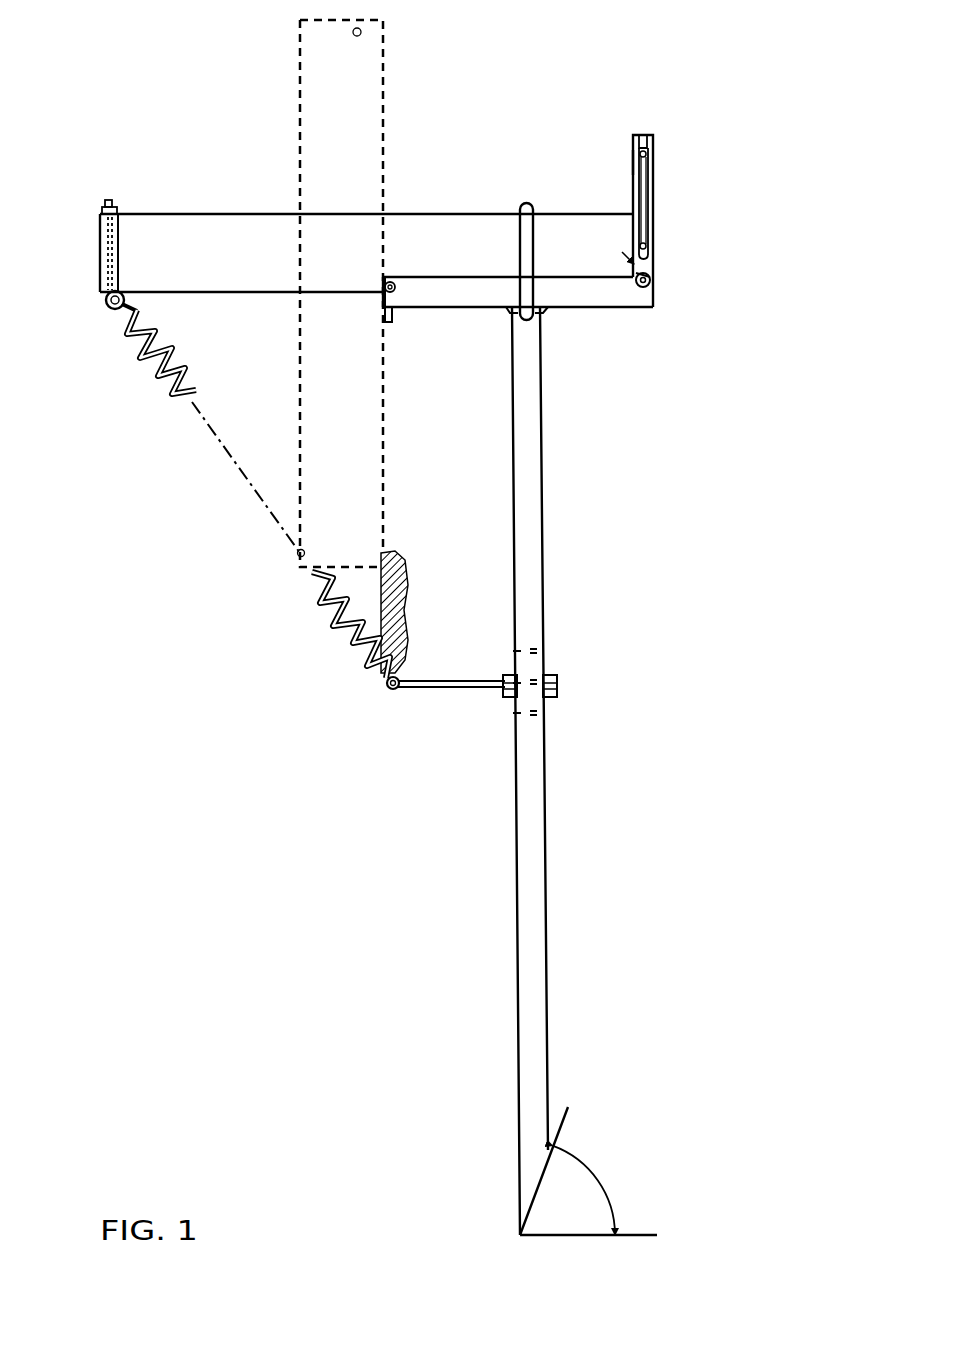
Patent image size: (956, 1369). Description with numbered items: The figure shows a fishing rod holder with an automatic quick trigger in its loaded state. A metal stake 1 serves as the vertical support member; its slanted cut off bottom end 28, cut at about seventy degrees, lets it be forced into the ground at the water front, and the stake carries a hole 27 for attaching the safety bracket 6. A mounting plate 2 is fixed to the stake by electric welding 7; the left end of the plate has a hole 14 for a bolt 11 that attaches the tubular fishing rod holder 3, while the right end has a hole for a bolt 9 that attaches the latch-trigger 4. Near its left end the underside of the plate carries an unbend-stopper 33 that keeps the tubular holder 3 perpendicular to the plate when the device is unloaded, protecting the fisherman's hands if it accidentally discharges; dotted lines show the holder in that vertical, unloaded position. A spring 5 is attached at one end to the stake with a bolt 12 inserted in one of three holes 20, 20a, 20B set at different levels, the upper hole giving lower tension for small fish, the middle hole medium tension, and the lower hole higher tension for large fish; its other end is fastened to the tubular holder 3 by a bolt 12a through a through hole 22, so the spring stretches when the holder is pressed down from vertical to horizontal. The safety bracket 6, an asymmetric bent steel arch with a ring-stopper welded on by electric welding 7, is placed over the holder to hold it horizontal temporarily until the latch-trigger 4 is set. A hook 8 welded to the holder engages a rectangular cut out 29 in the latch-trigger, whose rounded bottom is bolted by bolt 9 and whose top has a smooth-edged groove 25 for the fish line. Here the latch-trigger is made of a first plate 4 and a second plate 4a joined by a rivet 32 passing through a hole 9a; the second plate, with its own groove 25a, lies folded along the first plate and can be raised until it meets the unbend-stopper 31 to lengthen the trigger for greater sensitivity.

The metal stake 1 is at (530, 422).
The mounting plate 2 is at (648, 298).
The tubular fishing rod holder 3 is at (412, 230).
The latch-trigger 4 is at (635, 143).
The second plate 4a is at (640, 180).
The spring 5 is at (187, 365).
The safety bracket 6 is at (530, 208).
The electric welding 7 is at (545, 313).
The hook 8 is at (650, 276).
The bolt 9 is at (650, 279).
The hole 9a is at (646, 156).
The bolt 11 is at (391, 293).
The bolt 12 is at (397, 690).
The bolt 12a is at (105, 308).
The hole 14 is at (394, 291).
The upper hole 20 is at (545, 647).
The middle hole 20a is at (532, 690).
The lower hole 20B is at (517, 722).
The through hole 22 is at (100, 238).
The groove 25 is at (648, 135).
The groove 25a is at (652, 238).
The hole 27 is at (517, 315).
The slanted cut off bottom end 28 is at (533, 1200).
The rectangular cut out 29 is at (613, 244).
The unbend-stopper 31 is at (650, 136).
The rivet 32 is at (635, 160).
The unbend-stopper 33 is at (386, 316).